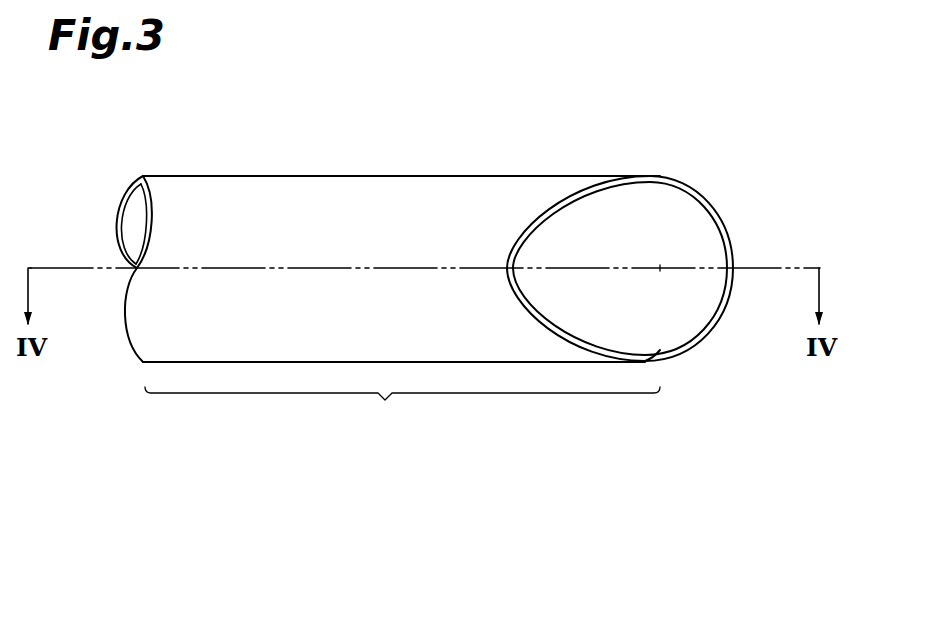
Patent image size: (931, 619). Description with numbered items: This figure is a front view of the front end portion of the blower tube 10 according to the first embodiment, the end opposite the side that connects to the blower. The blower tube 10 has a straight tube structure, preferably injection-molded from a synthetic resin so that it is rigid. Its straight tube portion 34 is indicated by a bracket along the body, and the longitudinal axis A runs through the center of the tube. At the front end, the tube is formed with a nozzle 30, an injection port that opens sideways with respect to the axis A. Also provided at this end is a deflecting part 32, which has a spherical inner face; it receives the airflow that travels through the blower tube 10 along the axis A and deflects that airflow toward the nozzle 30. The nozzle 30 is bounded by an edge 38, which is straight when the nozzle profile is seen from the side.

The blower tube 10 is at (493, 163).
The nozzle 30 is at (657, 349).
The deflecting part 32 is at (725, 310).
The straight tube portion 34 is at (402, 412).
The edge of the nozzle 38 is at (605, 190).
The longitudinal axis A is at (662, 268).